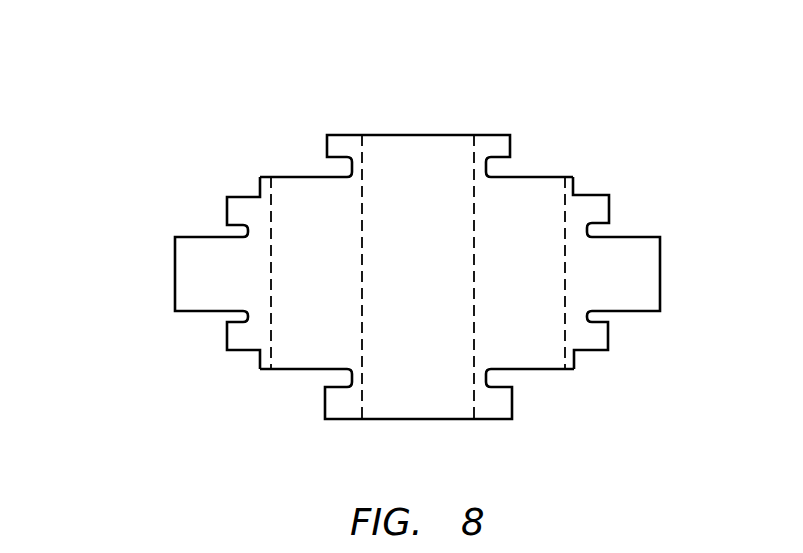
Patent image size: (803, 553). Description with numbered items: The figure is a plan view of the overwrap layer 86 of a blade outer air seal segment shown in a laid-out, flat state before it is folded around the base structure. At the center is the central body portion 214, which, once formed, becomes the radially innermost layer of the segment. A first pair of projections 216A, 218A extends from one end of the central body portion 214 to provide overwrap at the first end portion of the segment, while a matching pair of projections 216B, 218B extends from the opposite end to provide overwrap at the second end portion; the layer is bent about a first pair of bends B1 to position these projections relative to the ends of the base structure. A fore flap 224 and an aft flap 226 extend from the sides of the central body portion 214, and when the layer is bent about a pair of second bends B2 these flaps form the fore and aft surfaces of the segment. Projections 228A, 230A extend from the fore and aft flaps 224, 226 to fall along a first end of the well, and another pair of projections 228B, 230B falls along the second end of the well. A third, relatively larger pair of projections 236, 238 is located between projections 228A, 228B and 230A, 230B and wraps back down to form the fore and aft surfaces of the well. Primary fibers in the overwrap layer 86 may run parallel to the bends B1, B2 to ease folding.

The overwrap layer 86 is at (186, 92).
The central body portion 214 is at (435, 292).
The projection 216A is at (338, 406).
The projection 216B is at (336, 145).
The projection 218A is at (498, 405).
The projection 218B is at (498, 145).
The fore flap 224 is at (338, 292).
The aft flap 226 is at (543, 292).
The projection 228A is at (243, 340).
The projection 228B is at (240, 208).
The projection 230A is at (595, 333).
The projection 230B is at (593, 208).
The projection 236 is at (195, 296).
The projection 238 is at (632, 257).
The first pair of bends B1 is at (362, 153).
The second pair of bends B2 is at (272, 237).